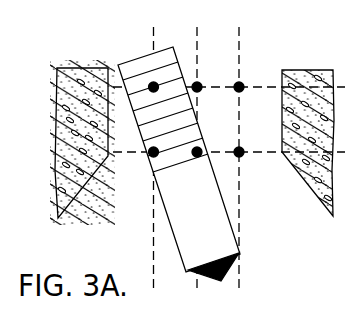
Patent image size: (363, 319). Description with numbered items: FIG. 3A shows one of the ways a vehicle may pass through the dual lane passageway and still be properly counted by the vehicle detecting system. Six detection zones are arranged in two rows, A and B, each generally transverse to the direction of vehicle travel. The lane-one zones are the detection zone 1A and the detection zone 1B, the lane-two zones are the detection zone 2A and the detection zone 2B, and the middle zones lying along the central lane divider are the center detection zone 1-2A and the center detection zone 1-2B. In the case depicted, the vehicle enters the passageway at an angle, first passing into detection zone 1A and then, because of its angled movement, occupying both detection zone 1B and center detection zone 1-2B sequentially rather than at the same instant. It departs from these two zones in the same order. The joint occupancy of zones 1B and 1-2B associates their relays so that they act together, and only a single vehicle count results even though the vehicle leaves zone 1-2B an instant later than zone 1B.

The detection zone 1A is at (151, 84).
The detection zone 1B is at (151, 154).
The center detection zone 1-2A is at (198, 82).
The center detection zone 1-2B is at (200, 146).
The detection zone 2A is at (242, 84).
The detection zone 2B is at (242, 149).